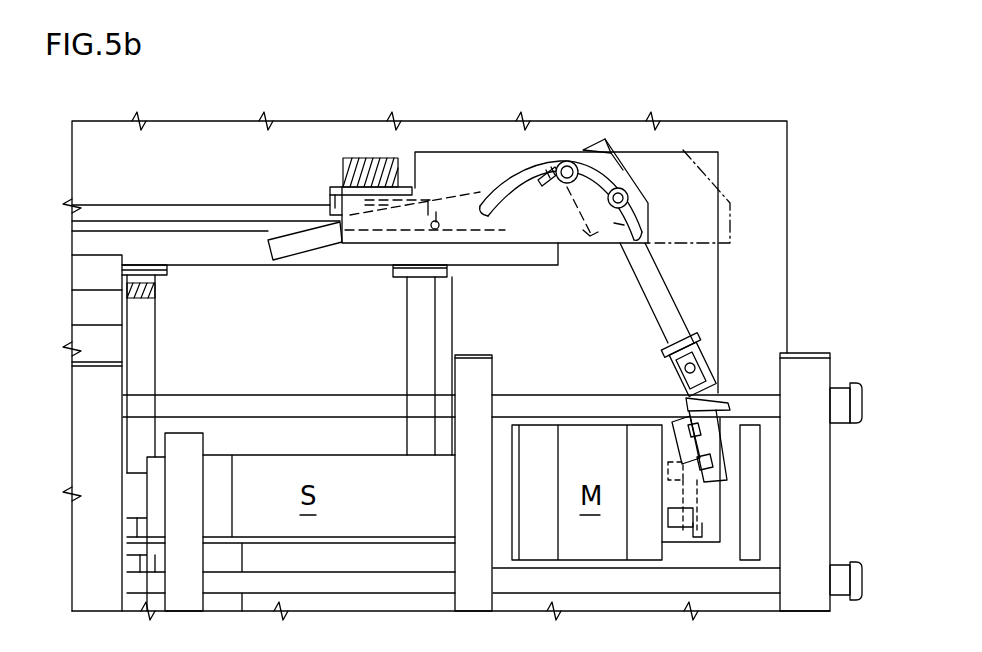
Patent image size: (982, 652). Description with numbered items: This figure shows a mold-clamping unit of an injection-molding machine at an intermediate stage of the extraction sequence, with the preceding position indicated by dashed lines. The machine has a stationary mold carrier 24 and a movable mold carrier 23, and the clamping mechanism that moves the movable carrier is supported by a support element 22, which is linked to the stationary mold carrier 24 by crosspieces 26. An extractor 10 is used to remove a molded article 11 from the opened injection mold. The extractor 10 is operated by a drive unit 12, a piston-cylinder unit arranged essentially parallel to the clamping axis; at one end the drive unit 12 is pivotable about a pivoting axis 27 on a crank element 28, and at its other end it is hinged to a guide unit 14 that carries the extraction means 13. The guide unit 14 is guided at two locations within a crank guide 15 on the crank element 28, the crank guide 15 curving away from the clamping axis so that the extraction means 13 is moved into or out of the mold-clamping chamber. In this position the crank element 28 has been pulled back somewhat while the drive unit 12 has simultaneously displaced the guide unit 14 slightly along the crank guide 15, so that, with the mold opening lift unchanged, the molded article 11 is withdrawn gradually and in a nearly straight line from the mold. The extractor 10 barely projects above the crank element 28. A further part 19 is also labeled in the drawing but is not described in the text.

The extractor 10 is at (690, 299).
The molded article 11 is at (690, 450).
The drive unit 12 is at (312, 240).
The extraction means 13 is at (717, 452).
The guide unit 14 is at (607, 140).
The crank guide 15 is at (537, 158).
The bracket 19 is at (248, 252).
The support element 22 is at (102, 415).
The movable mold carrier 23 is at (472, 382).
The stationary mold carrier 24 is at (810, 385).
The crosspieces 26 is at (322, 407).
The pivoting axis 27 is at (471, 214).
The crank element 28 is at (434, 168).